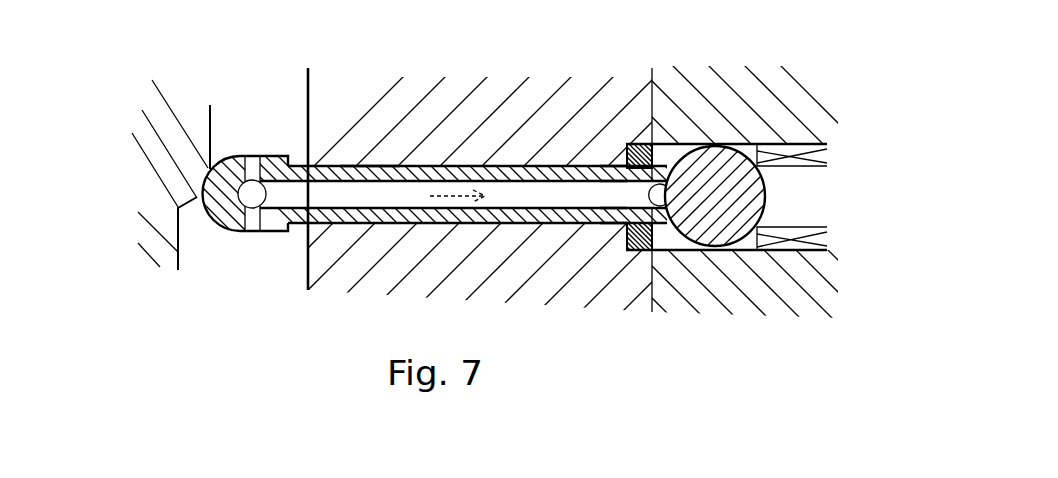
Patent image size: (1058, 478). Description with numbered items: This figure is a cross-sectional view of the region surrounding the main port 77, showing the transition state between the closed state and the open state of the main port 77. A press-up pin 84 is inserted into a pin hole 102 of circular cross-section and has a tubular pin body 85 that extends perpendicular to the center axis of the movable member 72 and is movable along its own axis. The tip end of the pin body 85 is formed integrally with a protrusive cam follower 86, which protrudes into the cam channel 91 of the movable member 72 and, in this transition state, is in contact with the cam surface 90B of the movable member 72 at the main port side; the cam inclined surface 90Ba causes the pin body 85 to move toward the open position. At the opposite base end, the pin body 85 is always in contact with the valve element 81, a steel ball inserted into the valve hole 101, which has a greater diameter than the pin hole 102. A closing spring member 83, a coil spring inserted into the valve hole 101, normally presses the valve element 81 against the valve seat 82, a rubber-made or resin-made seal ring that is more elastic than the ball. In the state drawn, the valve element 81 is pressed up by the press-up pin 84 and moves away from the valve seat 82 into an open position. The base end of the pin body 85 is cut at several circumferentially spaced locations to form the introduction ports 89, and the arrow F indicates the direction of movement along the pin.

The movable member 72 is at (127, 217).
The cam surface 90B is at (206, 138).
The cam inclined surface 90Ba is at (180, 207).
The cam channel 91 is at (222, 252).
The cam follower 86 is at (267, 156).
The pin hole 102 is at (377, 172).
The pin body 85 is at (432, 167).
The press-up pin 84 is at (512, 153).
The introduction ports 89 is at (607, 165).
The main port 77 is at (603, 106).
The valve seat 82 is at (627, 155).
The valve element 81 is at (692, 147).
The valve hole 101 is at (753, 144).
The closing spring member 83 is at (793, 144).
The force F is at (460, 200).